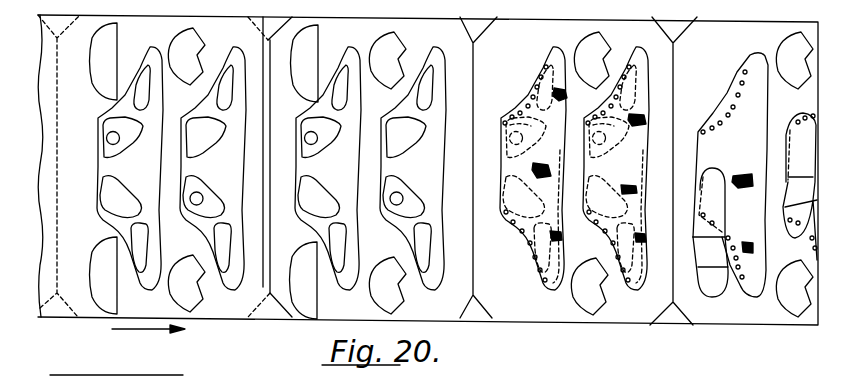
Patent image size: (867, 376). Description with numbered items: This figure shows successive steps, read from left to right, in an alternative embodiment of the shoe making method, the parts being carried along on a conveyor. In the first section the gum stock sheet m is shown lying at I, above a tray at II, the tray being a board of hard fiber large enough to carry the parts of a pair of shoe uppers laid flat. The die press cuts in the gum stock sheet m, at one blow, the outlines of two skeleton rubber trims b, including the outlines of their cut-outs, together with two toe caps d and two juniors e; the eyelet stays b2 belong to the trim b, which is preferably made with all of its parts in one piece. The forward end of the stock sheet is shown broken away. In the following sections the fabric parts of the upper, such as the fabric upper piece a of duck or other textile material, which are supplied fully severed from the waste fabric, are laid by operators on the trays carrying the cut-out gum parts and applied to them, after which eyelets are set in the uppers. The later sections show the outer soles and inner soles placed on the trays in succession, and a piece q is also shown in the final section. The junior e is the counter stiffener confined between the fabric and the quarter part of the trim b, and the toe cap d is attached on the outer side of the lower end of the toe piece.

The upper piece a is at (179, 293).
The rubber trim b is at (100, 170).
The eyelet stays b2 is at (395, 208).
The toe cap d is at (187, 57).
The junior e is at (99, 56).
The gum stock sheet m is at (258, 290).
The web strip n is at (683, 325).
The quarter piece q is at (798, 142).
The stock sheet I is at (220, 307).
The tray II is at (332, 305).